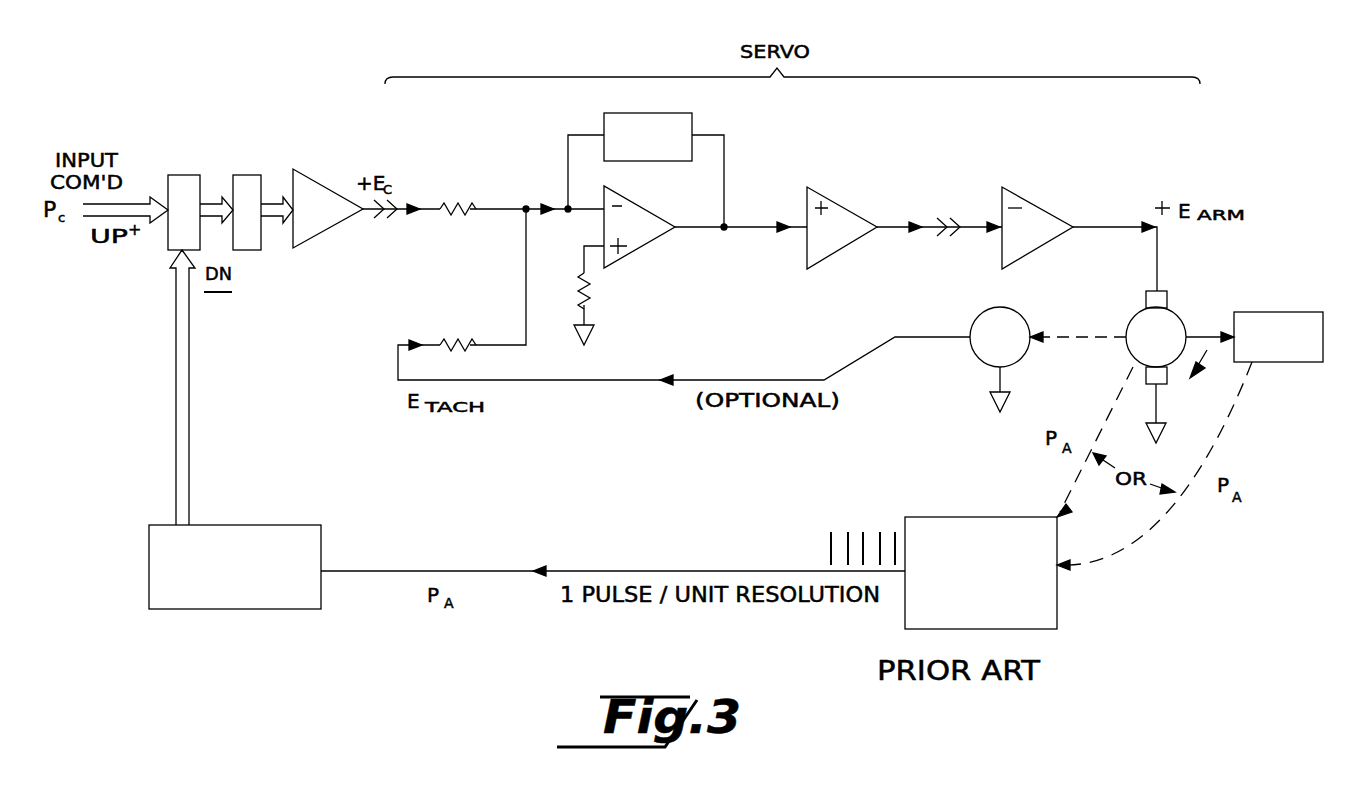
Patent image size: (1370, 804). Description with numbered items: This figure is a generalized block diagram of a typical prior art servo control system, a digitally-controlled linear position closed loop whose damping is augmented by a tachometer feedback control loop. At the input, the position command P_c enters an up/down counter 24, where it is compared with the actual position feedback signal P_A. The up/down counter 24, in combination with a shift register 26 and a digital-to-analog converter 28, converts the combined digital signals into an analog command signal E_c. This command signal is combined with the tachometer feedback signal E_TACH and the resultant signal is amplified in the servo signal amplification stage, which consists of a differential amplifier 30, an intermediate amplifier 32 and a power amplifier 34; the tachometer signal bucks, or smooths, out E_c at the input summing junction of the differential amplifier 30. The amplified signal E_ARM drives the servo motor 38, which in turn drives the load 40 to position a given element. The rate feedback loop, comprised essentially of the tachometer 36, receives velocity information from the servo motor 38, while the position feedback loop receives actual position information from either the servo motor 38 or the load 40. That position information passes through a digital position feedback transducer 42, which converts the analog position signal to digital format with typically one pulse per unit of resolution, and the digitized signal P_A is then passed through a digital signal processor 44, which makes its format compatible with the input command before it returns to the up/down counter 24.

The up/down counter 24 is at (168, 240).
The shift register 26 is at (258, 250).
The digital-to-analog converter 28 is at (330, 237).
The differential amplifier 30 is at (650, 250).
The intermediate amplifier 32 is at (843, 205).
The power amplifier 34 is at (1040, 208).
The tachometer 36 is at (1020, 315).
The servo motor 38 is at (1180, 318).
The load 40 is at (1290, 312).
The digital position feedback transducer 42 is at (962, 517).
The digital signal processor 44 is at (240, 609).